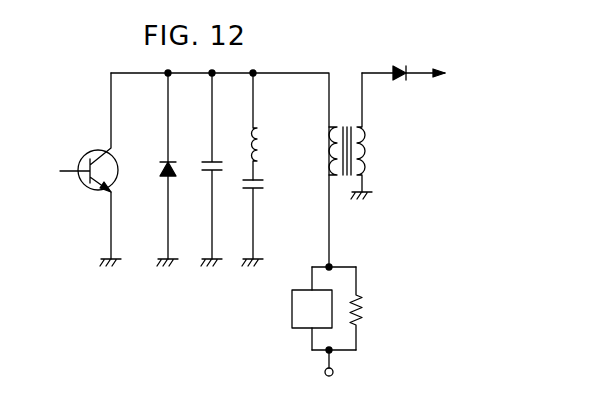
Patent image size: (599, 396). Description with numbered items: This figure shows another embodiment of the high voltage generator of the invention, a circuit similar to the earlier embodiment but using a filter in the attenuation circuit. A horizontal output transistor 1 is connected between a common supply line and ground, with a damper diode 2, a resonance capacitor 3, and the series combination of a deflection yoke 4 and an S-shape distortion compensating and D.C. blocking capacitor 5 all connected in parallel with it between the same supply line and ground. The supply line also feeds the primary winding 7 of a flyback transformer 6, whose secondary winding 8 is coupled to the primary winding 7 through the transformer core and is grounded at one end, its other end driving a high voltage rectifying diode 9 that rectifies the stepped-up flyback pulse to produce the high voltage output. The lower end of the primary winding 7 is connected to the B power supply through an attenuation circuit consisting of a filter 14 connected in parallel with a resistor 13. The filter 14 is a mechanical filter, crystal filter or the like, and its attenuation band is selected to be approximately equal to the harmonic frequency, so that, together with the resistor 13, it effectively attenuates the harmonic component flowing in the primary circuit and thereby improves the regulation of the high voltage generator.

The horizontal output transistor 1 is at (117, 152).
The damper diode 2 is at (170, 158).
The resonance capacitor 3 is at (214, 157).
The deflection yoke 4 is at (262, 153).
The S-shape distortion compensating and D.C. blocking capacitor 5 is at (248, 187).
The flyback transformer 6 is at (354, 141).
The primary winding 7 is at (327, 150).
The secondary winding 8 is at (369, 150).
The high voltage rectifying diode 9 is at (405, 82).
The resistor 13 is at (362, 305).
The filter 14 is at (297, 328).